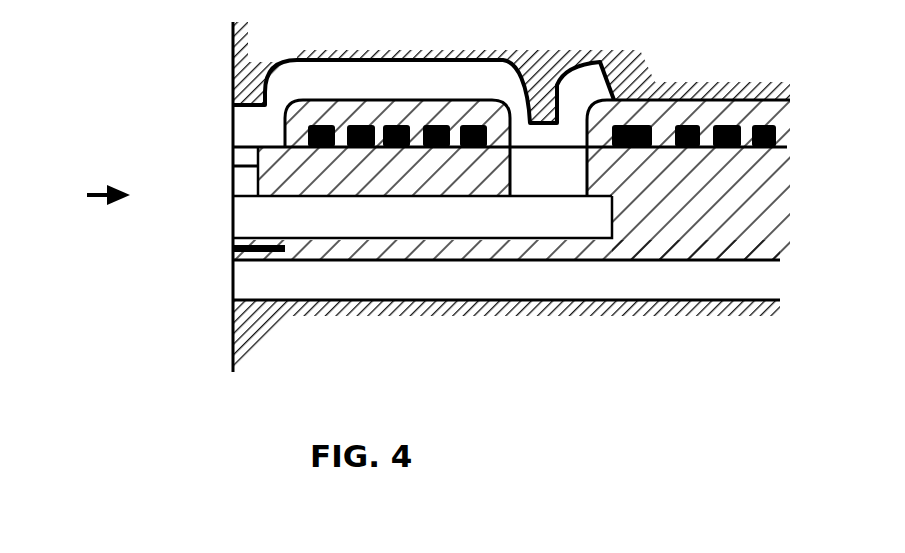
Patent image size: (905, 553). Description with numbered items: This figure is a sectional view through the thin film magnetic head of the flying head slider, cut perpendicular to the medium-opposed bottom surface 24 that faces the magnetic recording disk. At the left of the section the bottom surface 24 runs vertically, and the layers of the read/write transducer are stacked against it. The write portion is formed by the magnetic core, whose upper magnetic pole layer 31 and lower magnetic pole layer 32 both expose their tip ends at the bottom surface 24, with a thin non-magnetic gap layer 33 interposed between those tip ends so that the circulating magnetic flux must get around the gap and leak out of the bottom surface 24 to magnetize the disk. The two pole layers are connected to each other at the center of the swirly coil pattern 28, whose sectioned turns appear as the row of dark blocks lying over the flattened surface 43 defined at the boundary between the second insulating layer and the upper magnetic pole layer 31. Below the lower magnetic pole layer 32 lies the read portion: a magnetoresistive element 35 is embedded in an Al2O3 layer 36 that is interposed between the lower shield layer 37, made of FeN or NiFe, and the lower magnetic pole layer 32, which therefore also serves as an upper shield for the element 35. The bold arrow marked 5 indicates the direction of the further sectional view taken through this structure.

The section view indicator for FIG. 5 is at (86, 199).
The bottom surface 24 is at (232, 340).
The swirly coil pattern 28 is at (737, 124).
The upper magnetic pole layer 31 is at (264, 93).
The lower magnetic pole layer 32 is at (231, 225).
The non-magnetic gap layer 33 is at (222, 168).
The magnetoresistive (MR) element 35 is at (231, 250).
The Al2O3 layer 36 is at (503, 262).
The lower shield layer 37 is at (231, 282).
The flattened surface 43 is at (778, 149).